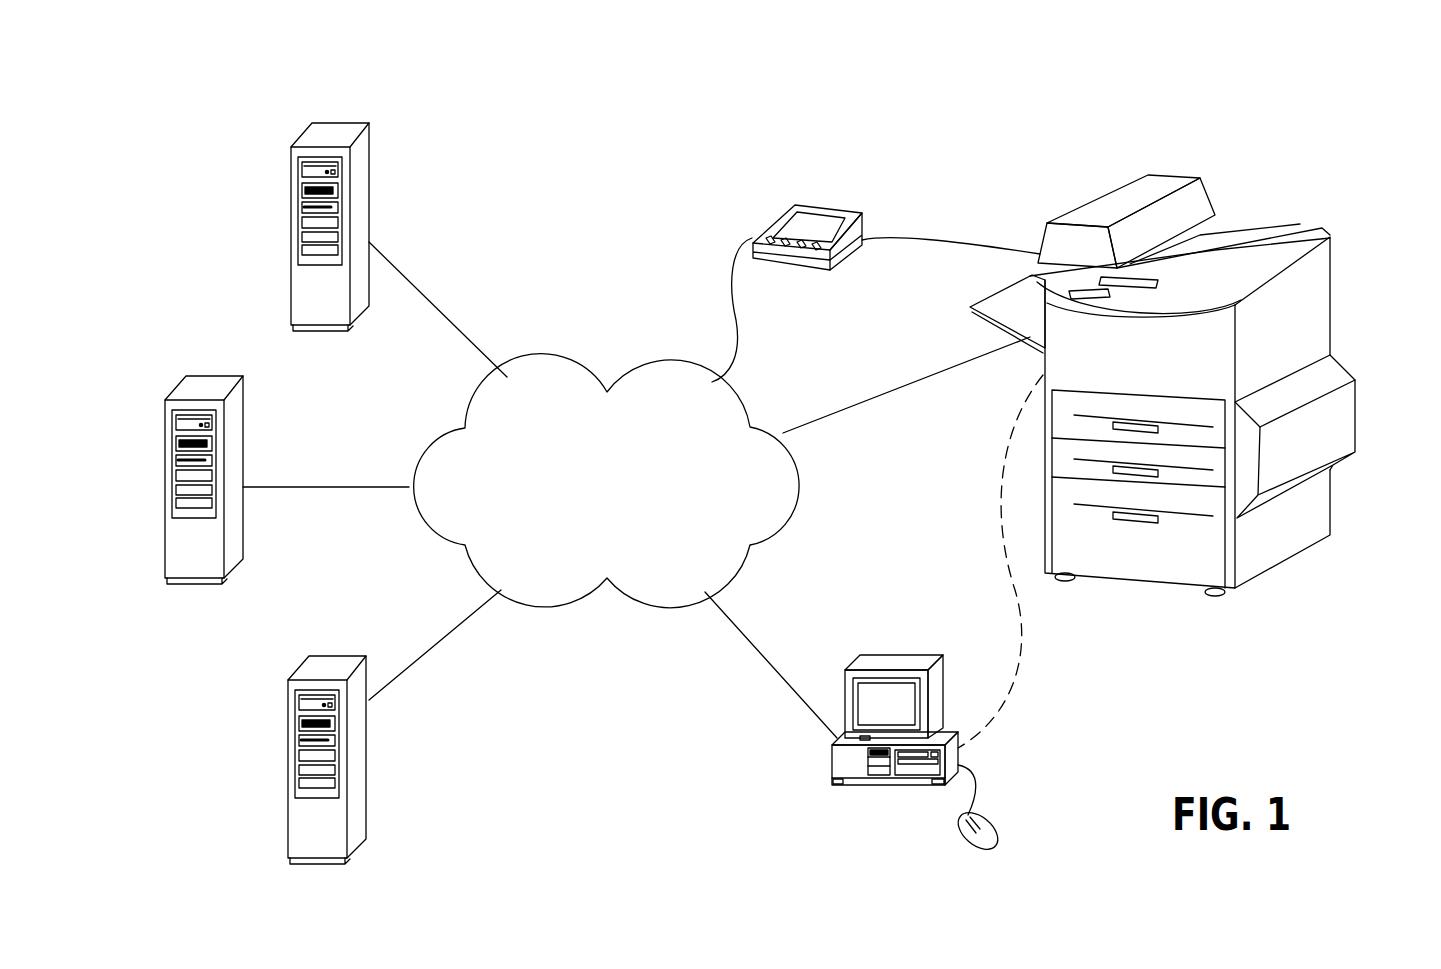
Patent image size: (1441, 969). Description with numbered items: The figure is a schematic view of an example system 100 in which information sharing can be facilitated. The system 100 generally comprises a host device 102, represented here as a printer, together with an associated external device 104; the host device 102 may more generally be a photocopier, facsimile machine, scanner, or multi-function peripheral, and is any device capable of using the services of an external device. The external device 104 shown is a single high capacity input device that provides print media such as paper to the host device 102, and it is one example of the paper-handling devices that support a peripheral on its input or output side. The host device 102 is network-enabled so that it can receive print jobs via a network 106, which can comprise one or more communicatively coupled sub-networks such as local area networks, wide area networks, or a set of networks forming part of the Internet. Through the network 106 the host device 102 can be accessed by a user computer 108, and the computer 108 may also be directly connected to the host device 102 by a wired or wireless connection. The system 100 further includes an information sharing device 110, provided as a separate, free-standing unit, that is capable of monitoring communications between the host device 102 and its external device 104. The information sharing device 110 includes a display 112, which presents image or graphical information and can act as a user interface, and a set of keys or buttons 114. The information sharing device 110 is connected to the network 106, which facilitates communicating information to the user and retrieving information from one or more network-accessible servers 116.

The system 100 is at (1374, 128).
The host device 102 is at (1176, 385).
The external device 104 is at (1372, 546).
The network 106 is at (623, 511).
The user computer 108 is at (804, 806).
The information sharing device 110 is at (792, 219).
The display 112 is at (818, 225).
The set of keys or buttons 114 is at (832, 248).
The network-accessible servers 116 is at (392, 156).